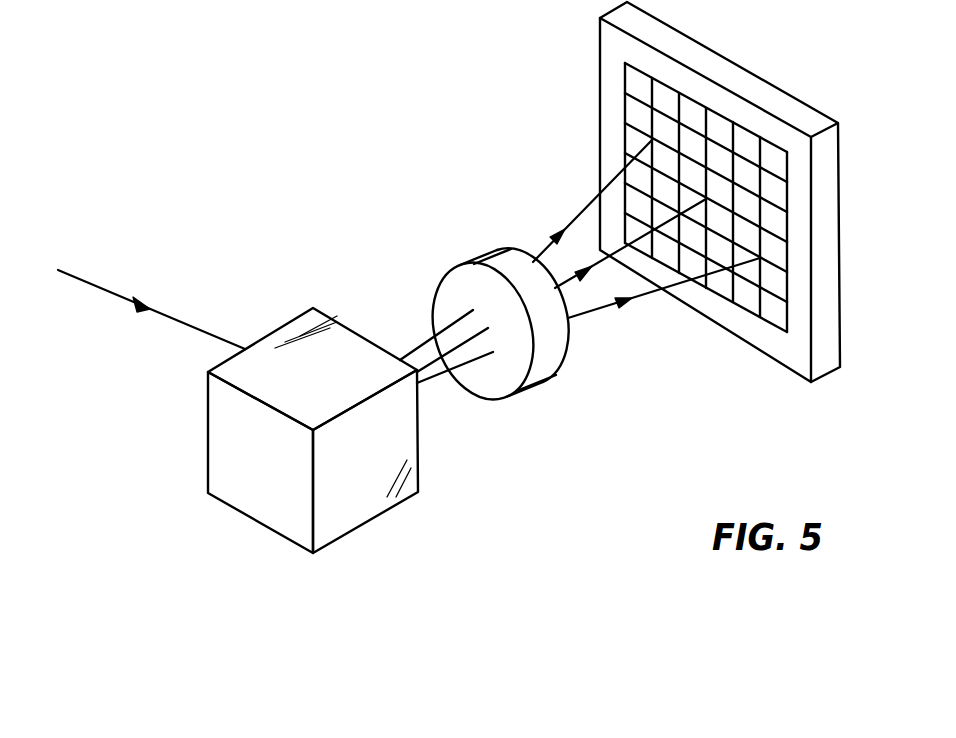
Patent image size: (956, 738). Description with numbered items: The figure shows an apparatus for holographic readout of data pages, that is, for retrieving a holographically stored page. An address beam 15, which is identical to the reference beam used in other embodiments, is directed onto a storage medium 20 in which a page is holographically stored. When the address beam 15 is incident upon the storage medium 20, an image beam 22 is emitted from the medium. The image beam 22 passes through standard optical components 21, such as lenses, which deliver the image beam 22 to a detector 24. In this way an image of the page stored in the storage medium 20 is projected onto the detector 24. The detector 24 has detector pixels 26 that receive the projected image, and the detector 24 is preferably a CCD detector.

The address beam 15 is at (179, 318).
The storage medium 20 is at (365, 337).
The optical components 21 is at (540, 383).
The image beam 22 is at (580, 279).
The detector 24 is at (802, 100).
The detector pixels 26 is at (772, 312).